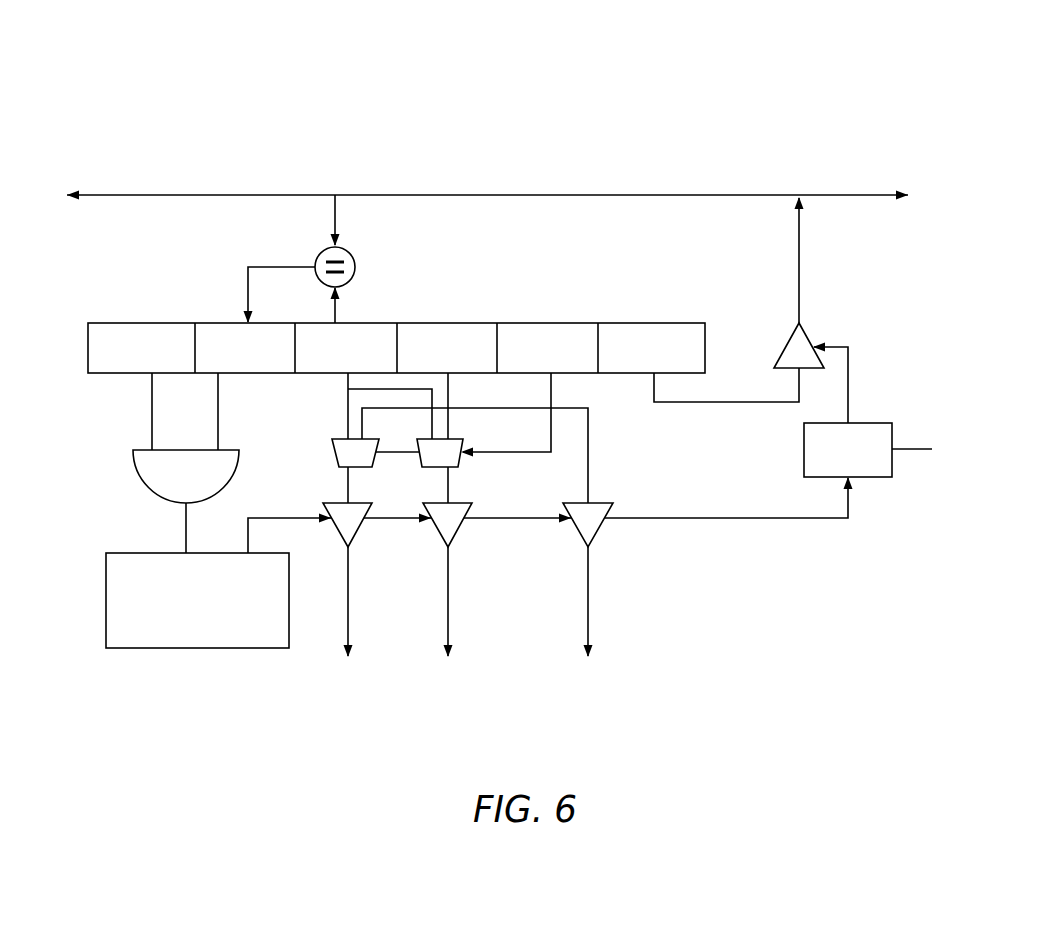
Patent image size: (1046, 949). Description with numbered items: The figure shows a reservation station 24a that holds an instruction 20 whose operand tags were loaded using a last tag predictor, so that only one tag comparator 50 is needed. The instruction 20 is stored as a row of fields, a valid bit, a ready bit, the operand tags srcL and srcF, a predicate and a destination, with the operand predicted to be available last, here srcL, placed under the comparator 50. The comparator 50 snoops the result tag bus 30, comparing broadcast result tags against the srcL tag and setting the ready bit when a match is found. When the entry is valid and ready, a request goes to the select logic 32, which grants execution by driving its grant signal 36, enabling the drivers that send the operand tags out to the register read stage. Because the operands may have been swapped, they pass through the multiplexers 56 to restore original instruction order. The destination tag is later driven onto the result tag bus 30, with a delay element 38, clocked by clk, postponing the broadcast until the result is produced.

The reservation station 24a is at (598, 80).
The result tag bus 30 is at (710, 193).
The tag comparator 50 is at (357, 253).
The instruction 20 is at (683, 323).
The select logic 32 is at (130, 553).
The grant signal 36 is at (258, 537).
The multiplexers 56 is at (478, 477).
The delay element 38 is at (870, 423).